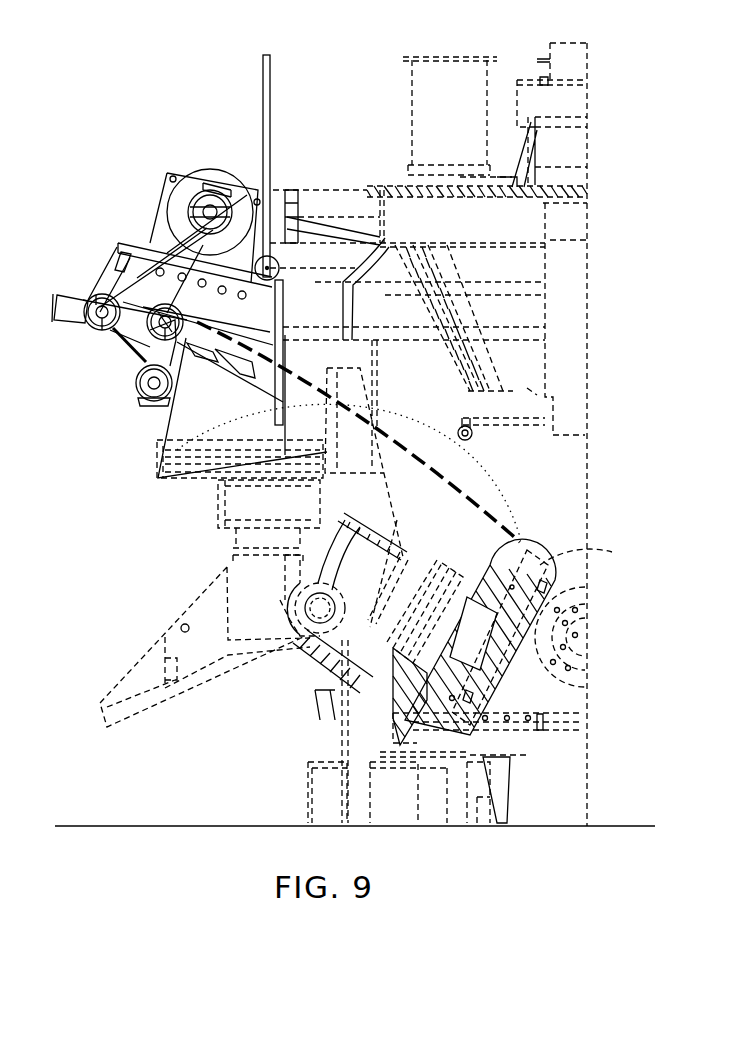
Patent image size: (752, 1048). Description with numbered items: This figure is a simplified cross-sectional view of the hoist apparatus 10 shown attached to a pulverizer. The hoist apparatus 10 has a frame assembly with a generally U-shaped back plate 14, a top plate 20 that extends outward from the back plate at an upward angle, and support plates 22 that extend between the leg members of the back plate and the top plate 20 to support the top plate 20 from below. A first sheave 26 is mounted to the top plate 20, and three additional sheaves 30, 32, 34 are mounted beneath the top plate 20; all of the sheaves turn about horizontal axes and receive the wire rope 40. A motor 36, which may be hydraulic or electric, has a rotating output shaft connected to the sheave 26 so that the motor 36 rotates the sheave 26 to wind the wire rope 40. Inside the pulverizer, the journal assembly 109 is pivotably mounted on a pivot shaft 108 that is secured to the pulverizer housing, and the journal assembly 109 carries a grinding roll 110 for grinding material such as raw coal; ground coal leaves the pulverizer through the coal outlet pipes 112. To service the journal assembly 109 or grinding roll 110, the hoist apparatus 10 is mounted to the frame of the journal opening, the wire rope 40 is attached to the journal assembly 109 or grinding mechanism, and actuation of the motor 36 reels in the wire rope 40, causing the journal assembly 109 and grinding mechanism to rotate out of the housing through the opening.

The hoist apparatus 10 is at (126, 110).
The back plate 14 is at (302, 290).
The top plate 20 is at (128, 245).
The support plates 22 is at (214, 378).
The first sheave 26 is at (230, 174).
The sheave 30 is at (113, 325).
The sheave 32 is at (141, 395).
The sheave 34 is at (148, 322).
The motor 36 is at (212, 182).
The wire rope 40 is at (106, 282).
The pivot shaft 108 is at (302, 640).
The journal assembly 109 is at (215, 612).
The grinding roll 110 is at (550, 560).
The coal outlet pipes 112 is at (458, 80).